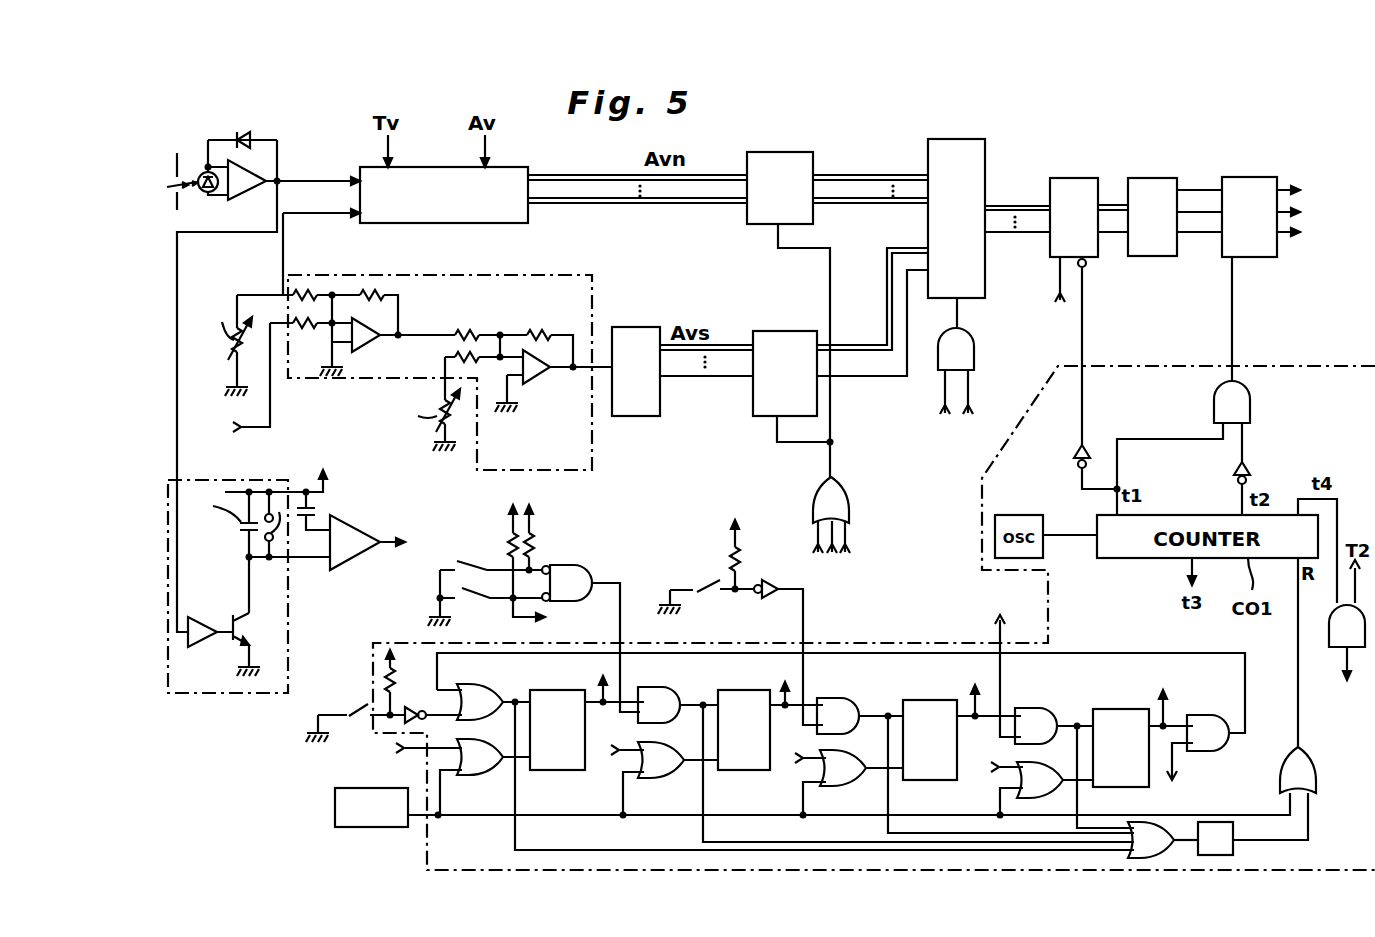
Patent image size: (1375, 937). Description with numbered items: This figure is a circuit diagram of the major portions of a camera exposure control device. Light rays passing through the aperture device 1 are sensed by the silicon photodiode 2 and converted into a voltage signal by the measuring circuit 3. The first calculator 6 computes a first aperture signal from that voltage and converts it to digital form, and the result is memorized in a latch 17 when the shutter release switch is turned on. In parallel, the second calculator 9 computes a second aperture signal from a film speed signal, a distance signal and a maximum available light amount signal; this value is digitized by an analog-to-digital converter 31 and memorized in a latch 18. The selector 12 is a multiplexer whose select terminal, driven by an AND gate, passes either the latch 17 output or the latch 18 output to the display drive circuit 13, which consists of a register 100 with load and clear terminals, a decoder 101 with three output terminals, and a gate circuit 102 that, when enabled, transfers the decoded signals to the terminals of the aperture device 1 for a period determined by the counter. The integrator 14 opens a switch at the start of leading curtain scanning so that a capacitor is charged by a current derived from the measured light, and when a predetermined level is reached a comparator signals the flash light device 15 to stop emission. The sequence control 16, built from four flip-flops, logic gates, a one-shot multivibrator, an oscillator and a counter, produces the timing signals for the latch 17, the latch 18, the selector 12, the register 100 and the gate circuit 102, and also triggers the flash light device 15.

The aperture device 1 is at (178, 152).
The silicon photodiode 2 is at (208, 197).
The measuring circuit 3 is at (244, 130).
The first calculator 6 is at (522, 223).
The second calculator 9 is at (350, 378).
The selector 12 is at (985, 215).
The display drive circuit 13 is at (1073, 133).
The integrator 14 is at (228, 693).
The flash light device 15 is at (845, 612).
The sequence control 16 is at (843, 642).
The latch 17 is at (782, 152).
The latch 18 is at (780, 331).
The analog-to-digital converter 31 is at (640, 416).
The register 100 is at (1074, 178).
The decoder 101 is at (1152, 178).
The gate circuit 102 is at (1245, 177).